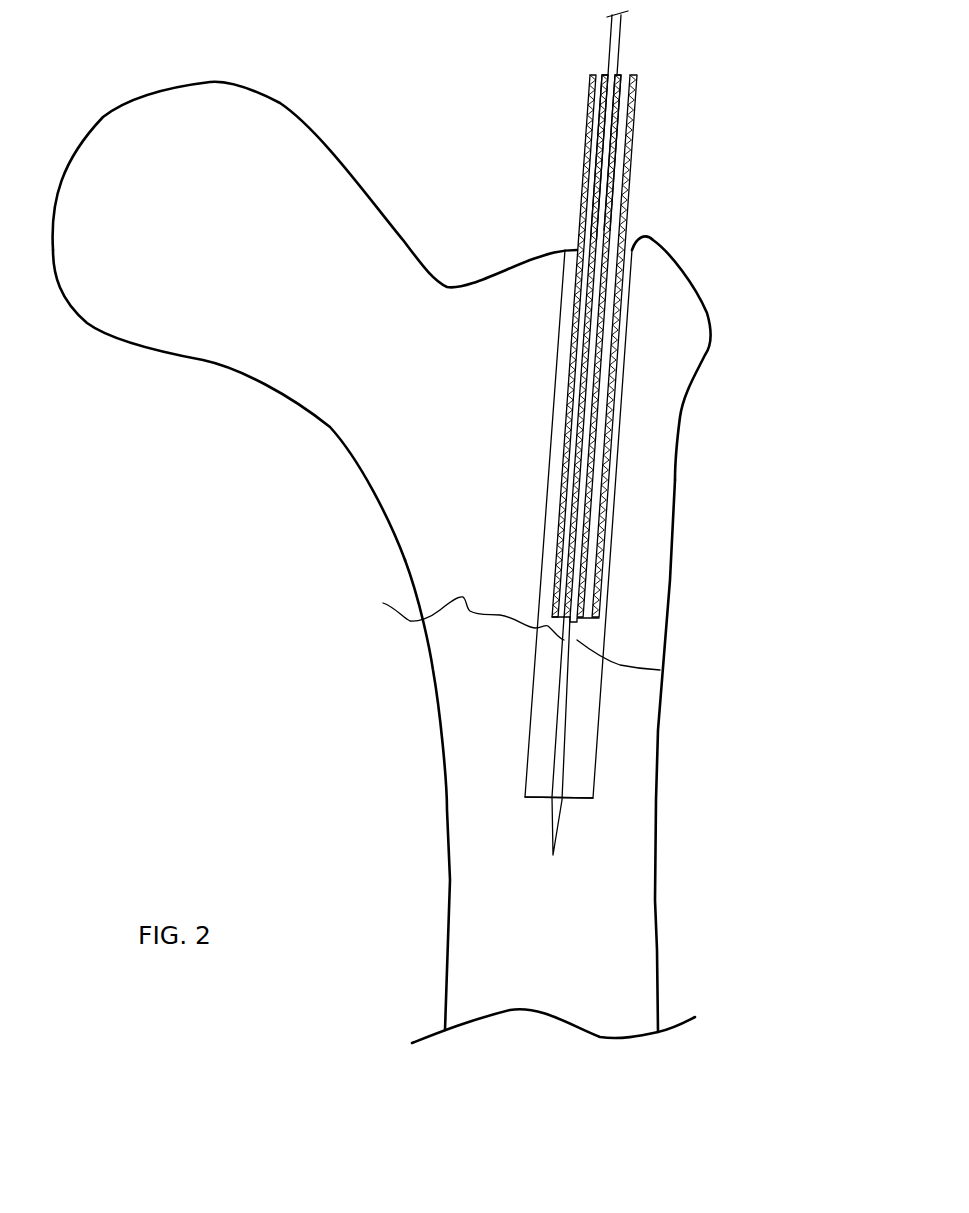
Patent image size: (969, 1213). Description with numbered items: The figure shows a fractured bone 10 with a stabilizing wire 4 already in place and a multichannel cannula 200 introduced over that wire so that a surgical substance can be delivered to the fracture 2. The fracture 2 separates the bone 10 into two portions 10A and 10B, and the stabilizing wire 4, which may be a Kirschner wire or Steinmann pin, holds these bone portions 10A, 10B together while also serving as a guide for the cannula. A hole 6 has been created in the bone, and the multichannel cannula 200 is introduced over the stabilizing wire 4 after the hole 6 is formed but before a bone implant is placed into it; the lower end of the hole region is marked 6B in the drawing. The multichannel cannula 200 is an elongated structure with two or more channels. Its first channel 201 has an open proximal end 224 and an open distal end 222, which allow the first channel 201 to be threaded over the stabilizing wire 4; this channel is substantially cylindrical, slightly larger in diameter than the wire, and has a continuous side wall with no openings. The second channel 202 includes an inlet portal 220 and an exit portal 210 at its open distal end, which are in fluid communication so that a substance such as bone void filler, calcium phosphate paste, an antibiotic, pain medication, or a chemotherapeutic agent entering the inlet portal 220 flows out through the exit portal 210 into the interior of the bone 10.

The bone 10 is at (378, 556).
The bone portion 10A is at (325, 382).
The bone portion 10B is at (470, 775).
The fracture 2 is at (383, 603).
The stabilizing wire 4 is at (622, 34).
The hole 6 is at (552, 475).
The distal end of sheath 6B is at (585, 800).
The multichannel cannula 200 is at (583, 145).
The first channel 201 is at (615, 133).
The second channel 202 is at (593, 205).
The exit portal 210 is at (567, 620).
The inlet portal 220 is at (602, 73).
The open distal end 222 is at (571, 622).
The open proximal end 224 is at (616, 74).